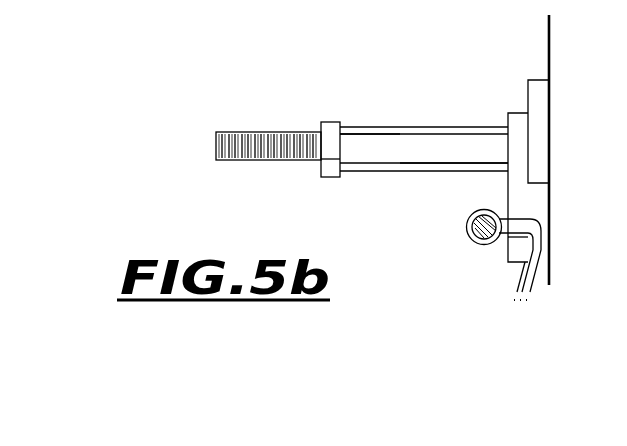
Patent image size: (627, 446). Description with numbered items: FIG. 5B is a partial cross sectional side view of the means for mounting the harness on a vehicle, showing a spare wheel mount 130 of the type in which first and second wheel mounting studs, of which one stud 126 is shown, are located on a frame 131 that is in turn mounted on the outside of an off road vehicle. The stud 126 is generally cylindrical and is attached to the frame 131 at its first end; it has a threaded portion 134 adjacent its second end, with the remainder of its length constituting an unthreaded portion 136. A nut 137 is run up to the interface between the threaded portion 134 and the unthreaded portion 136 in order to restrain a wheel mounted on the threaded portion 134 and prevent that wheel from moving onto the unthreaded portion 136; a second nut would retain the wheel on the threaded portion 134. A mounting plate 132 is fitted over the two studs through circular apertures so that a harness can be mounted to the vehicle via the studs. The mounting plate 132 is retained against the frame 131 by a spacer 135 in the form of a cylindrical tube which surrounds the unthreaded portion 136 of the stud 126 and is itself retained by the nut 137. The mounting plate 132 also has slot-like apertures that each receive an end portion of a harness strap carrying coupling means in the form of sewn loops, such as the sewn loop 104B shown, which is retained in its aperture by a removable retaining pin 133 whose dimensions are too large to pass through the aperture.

The sewn loop 104B is at (465, 249).
The wheel mounting stud 126 is at (222, 131).
The spare wheel mount 130 is at (405, 120).
The frame 131 is at (540, 107).
The mounting plate 132 is at (513, 115).
The retaining pin 133 is at (490, 235).
The threaded portion 134 is at (278, 150).
The spacer 135 is at (438, 168).
The unthreaded portion 136 is at (362, 152).
The nut 137 is at (332, 122).